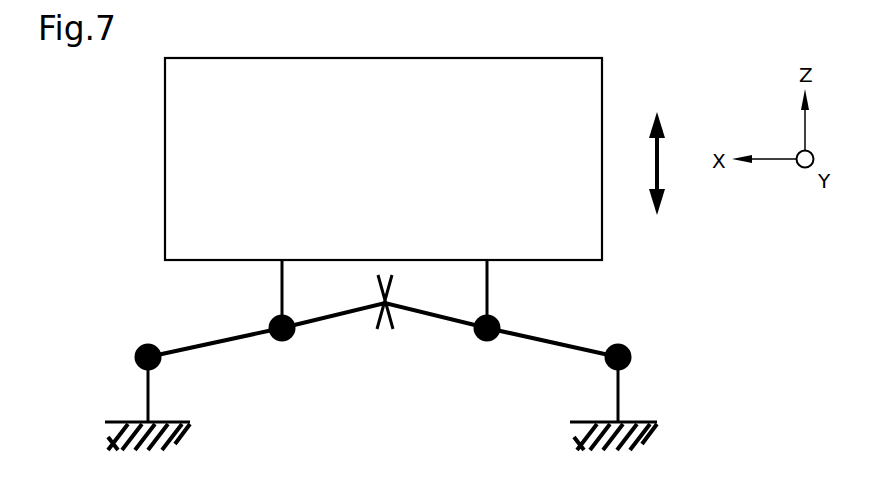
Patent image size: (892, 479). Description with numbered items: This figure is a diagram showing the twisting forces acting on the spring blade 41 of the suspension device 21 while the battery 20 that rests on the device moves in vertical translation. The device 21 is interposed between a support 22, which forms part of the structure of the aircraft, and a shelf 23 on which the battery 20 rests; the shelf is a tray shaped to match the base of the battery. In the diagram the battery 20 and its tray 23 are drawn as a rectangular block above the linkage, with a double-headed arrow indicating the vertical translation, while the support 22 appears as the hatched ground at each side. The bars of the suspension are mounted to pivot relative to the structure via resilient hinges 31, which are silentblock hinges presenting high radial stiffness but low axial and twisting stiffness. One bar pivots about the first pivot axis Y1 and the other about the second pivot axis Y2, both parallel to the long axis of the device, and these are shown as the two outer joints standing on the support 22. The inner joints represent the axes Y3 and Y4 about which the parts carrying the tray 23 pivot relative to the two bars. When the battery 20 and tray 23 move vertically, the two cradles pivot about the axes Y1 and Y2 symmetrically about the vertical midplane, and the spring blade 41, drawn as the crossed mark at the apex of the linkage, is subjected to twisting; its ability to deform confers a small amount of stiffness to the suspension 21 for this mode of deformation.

The battery 20 is at (599, 67).
The device 21 is at (89, 280).
The support 22 is at (115, 421).
The shelf 23 is at (512, 262).
The resilient hinge 31 is at (409, 345).
The spring blade 41 is at (378, 322).
The first pivot axis Y1 is at (163, 366).
The second pivot axis Y2 is at (631, 366).
The pivot axis Y3 is at (283, 343).
The pivot axis Y4 is at (496, 343).